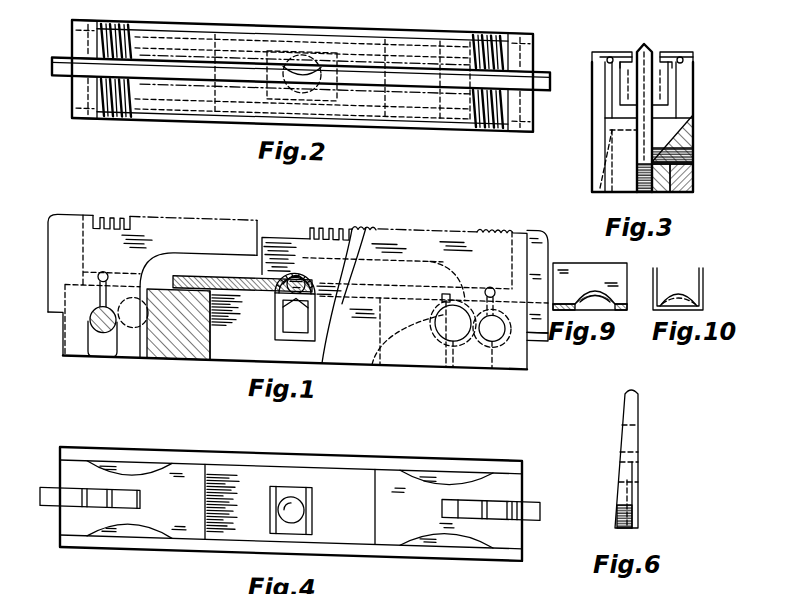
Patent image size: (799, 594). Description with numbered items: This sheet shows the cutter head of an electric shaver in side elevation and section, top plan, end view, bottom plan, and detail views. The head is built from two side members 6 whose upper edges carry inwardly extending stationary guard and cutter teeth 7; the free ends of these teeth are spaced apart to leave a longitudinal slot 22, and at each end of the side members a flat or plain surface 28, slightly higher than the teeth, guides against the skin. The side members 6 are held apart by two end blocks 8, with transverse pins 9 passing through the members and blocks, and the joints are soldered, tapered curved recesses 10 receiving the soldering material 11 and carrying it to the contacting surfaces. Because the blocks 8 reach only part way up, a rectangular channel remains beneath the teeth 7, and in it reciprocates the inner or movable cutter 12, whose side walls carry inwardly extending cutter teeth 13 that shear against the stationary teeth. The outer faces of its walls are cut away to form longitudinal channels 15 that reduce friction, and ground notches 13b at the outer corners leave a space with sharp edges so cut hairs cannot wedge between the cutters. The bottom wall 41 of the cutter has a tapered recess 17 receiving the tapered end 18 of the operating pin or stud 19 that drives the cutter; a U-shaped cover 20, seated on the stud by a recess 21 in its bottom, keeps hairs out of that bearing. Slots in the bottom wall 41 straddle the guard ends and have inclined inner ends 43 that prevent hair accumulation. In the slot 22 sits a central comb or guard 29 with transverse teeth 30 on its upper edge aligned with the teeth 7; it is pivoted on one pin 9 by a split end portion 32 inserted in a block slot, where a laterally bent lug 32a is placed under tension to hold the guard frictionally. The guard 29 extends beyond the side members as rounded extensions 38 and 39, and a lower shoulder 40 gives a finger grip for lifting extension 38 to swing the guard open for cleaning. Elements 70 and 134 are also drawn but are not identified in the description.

In FIG. 2, the side members 6 is at (362, 25).
In FIG. 3, the side members 6 is at (590, 125).
In FIG. 1, the side members 6 is at (400, 229).
In FIG. 4, the side members 6 is at (273, 445).
In FIG. 2, the stationary guard and cutter teeth 7 is at (137, 52).
In FIG. 3, the stationary guard and cutter teeth 7 is at (620, 55).
In FIG. 3, the blocks 8 is at (612, 155).
In FIG. 1, the blocks 8 is at (160, 355).
In FIG. 4, the blocks 8 is at (515, 471).
In FIG. 3, the transverse pins 9 is at (690, 156).
In FIG. 1, the transverse pins 9 is at (103, 329).
In FIG. 3, the recesses 10 is at (690, 188).
In FIG. 1, the recesses 10 is at (398, 312).
In FIG. 4, the recesses 10 is at (160, 459).
In FIG. 3, the soldering material 11 is at (676, 184).
In FIG. 4, the soldering material 11 is at (118, 456).
In FIG. 3, the inner or movable cutter 12 is at (672, 93).
In FIG. 1, the cutter teeth 13 is at (350, 219).
In FIG. 3, the longitudinal channels or notches 13b is at (598, 60).
In FIG. 3, the longitudinal channels 15 is at (608, 85).
In FIG. 1, the tapered recess 17 is at (280, 286).
In FIG. 4, the tapered recess 17 is at (272, 502).
In FIG. 1, the tapered end 18 is at (305, 275).
In FIG. 1, the operating pin or stud 19 is at (297, 322).
In FIG. 2, the U-shaped plate or cover 20 is at (300, 40).
In FIG. 3, the U-shaped plate or cover 20 is at (623, 92).
In FIG. 9, the U-shaped plate or cover 20 is at (575, 268).
In FIG. 10, the U-shaped plate or cover 20 is at (663, 292).
In FIG. 9, the recess 21 is at (590, 300).
In FIG. 2, the longitudinal slot 22 is at (205, 76).
In FIG. 3, the longitudinal slot 22 is at (644, 48).
In FIG. 2, the flat or plain surface 28 is at (72, 45).
In FIG. 3, the flat or plain surface 28 is at (624, 50).
In FIG. 2, the comb or guard 29 is at (420, 67).
In FIG. 3, the comb or guard 29 is at (648, 76).
In FIG. 1, the comb or guard 29 is at (222, 235).
In FIG. 6, the comb or guard 29 is at (633, 436).
In FIG. 2, the transverse teeth 30 is at (140, 116).
In FIG. 1, the transverse teeth 30 is at (104, 213).
In FIG. 4, the transverse teeth 30 is at (436, 586).
In FIG. 3, the end portion 32 is at (644, 192).
In FIG. 6, the lug 32a is at (617, 517).
In FIG. 2, the extension 38 is at (62, 77).
In FIG. 1, the extension 38 is at (48, 222).
In FIG. 2, the extension 39 is at (533, 81).
In FIG. 1, the extension 39 is at (535, 225).
In FIG. 6, the extension 39 is at (693, 592).
In FIG. 3, the lower shoulder 40 is at (646, 160).
In FIG. 1, the lower shoulder 40 is at (52, 318).
In FIG. 4, the lower shoulder 40 is at (52, 487).
In FIG. 1, the bottom wall 41 is at (228, 274).
In FIG. 1, the inclined inner ends 43 is at (185, 276).
In FIG. 1, the cap 70 is at (295, 261).
In FIG. 1, the socket 134 is at (130, 328).